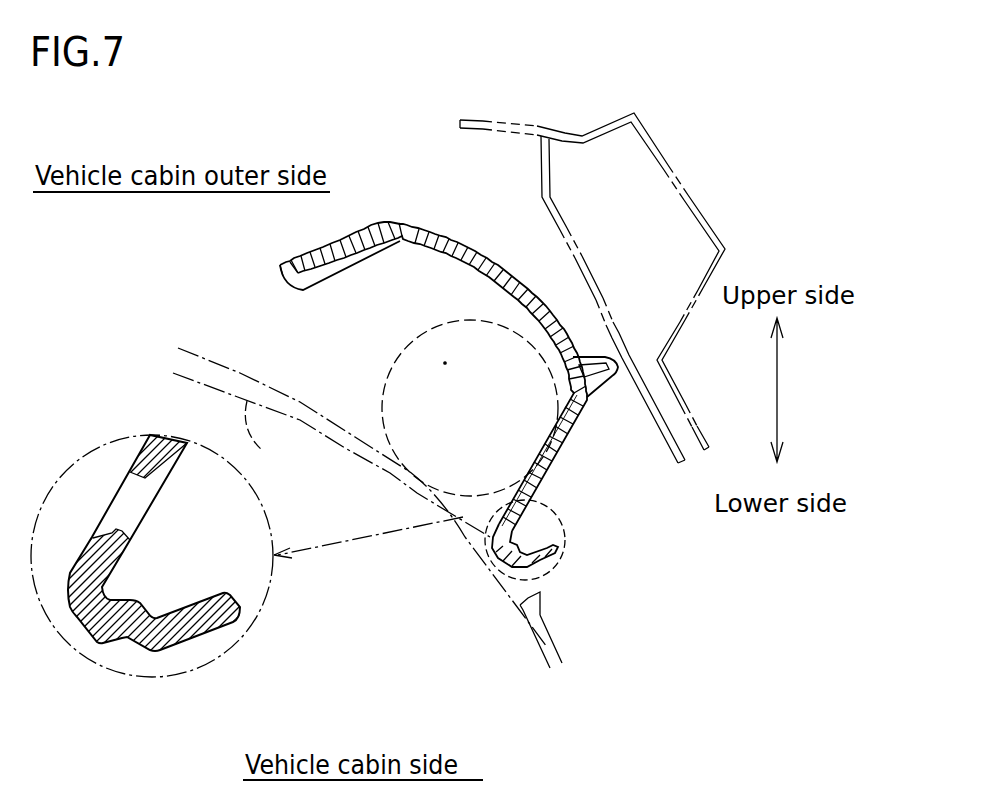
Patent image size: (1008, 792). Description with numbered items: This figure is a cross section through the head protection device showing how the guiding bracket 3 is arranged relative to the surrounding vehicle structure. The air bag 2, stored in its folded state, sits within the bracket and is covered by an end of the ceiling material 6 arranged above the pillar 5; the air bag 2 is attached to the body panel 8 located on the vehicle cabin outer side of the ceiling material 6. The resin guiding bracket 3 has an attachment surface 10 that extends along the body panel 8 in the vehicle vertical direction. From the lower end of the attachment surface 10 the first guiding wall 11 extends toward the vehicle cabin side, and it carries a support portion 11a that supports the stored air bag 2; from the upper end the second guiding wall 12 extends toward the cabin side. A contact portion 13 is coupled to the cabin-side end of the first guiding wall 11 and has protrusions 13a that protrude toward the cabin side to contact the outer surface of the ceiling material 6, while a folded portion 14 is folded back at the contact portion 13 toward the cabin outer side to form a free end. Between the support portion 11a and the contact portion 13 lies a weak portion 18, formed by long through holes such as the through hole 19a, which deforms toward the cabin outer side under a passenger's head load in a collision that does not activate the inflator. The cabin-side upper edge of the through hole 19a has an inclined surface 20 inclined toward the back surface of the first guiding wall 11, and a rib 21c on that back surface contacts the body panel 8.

The air bag 2 is at (387, 385).
The guiding bracket 3 is at (402, 196).
The pillar 5 is at (557, 652).
The ceiling material 6 is at (265, 443).
The body panel 8 is at (503, 114).
The attachment surface 10 is at (527, 300).
The first guiding wall 11 is at (562, 452).
The support portion 11a is at (558, 465).
The second guiding wall 12 is at (362, 264).
The contact portion 13 is at (508, 570).
The protrusions 13a is at (500, 562).
The folded portion 14 is at (547, 567).
The weak portion 18 is at (567, 527).
The through hole 19a is at (548, 531).
The inclined surface 20 is at (90, 540).
The rib 21c is at (606, 388).